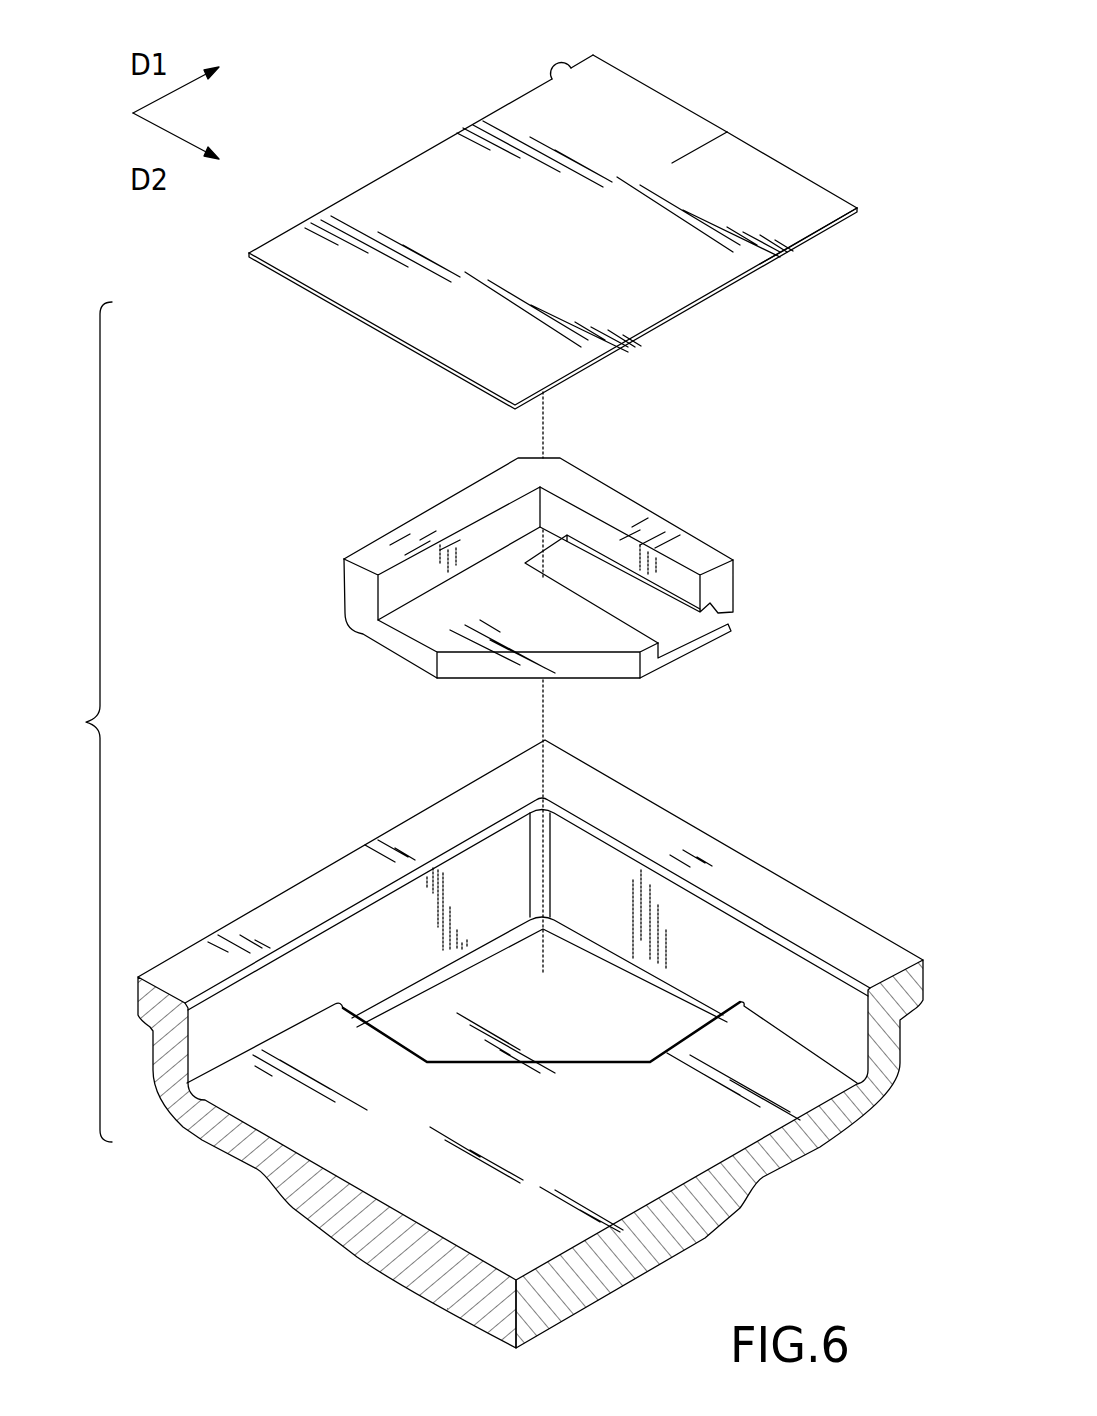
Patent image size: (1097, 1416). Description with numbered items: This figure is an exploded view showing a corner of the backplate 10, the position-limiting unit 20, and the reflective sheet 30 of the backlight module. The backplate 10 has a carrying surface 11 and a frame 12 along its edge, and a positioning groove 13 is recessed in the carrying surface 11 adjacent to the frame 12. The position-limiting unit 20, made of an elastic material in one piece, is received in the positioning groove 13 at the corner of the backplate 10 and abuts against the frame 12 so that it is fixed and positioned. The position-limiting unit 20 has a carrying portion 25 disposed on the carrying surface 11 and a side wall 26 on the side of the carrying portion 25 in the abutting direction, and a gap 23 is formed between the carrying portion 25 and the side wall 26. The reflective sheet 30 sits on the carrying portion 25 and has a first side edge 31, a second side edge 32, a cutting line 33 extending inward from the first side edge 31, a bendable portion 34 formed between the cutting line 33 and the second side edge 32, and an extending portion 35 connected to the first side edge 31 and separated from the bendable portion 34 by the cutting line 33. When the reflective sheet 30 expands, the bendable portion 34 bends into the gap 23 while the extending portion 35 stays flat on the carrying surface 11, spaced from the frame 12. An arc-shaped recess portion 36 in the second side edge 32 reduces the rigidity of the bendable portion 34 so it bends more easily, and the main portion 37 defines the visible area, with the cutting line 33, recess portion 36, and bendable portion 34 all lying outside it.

The backplate 10 is at (291, 862).
The carrying surface 11 is at (323, 1122).
The frame 12 is at (815, 910).
The positioning groove 13 is at (573, 1042).
The position-limiting unit 20 is at (410, 482).
The gap 23 is at (707, 618).
The carrying portion 25 is at (462, 623).
The side wall 26 is at (680, 540).
The reflective sheet 30 is at (418, 132).
The first side edge 31 is at (800, 172).
The second side edge 32 is at (580, 53).
The cutting line 33 is at (697, 148).
The bendable portion 34 is at (643, 100).
The extending portion 35 is at (818, 213).
The recess portion 36 is at (553, 81).
The main portion 37 is at (375, 213).